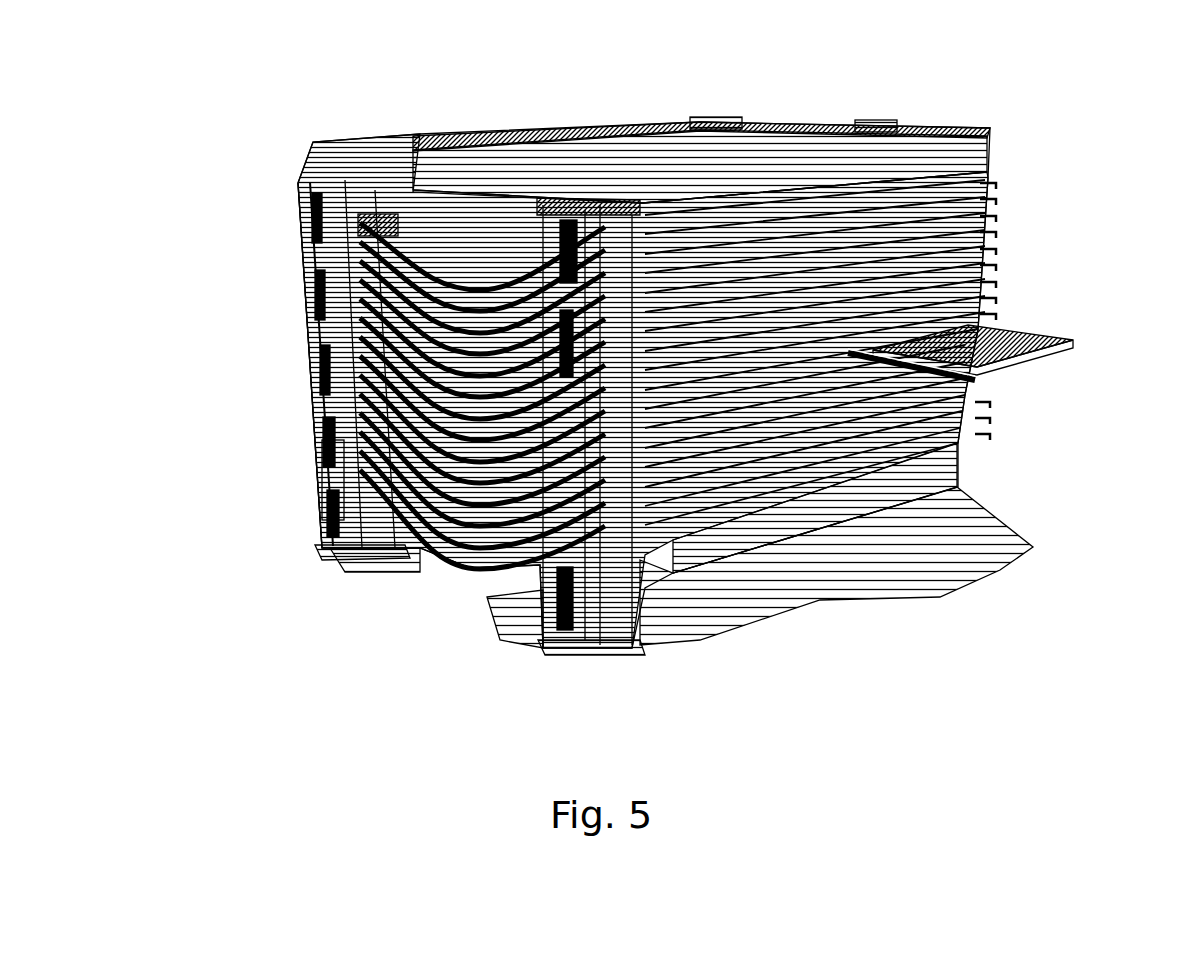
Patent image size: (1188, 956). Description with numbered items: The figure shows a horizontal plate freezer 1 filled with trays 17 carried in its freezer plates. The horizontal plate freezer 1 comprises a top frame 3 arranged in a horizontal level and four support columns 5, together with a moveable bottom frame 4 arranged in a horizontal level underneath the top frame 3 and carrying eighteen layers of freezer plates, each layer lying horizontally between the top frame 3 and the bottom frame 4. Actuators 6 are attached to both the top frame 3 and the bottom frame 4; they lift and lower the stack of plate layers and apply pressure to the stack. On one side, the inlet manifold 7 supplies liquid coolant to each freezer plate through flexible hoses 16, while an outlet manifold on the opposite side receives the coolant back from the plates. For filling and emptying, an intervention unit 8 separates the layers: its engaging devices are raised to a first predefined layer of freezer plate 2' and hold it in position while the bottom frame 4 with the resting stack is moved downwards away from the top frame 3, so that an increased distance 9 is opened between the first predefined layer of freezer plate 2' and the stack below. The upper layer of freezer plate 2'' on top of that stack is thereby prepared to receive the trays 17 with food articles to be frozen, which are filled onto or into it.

The horizontal plate freezer 1 is at (262, 155).
The first predefined layer of freezer plate 2' is at (868, 285).
The upper layer of freezer plate 2'' is at (851, 442).
The top frame 3 is at (735, 147).
The bottom frame 4 is at (802, 503).
The support columns 5 is at (333, 475).
The actuators 6 is at (387, 223).
The inlet manifold 7 is at (642, 540).
The intervention unit 8 is at (308, 440).
The increased distance 9 is at (968, 372).
The flexible hoses 16 is at (478, 538).
The trays 17 is at (1013, 333).